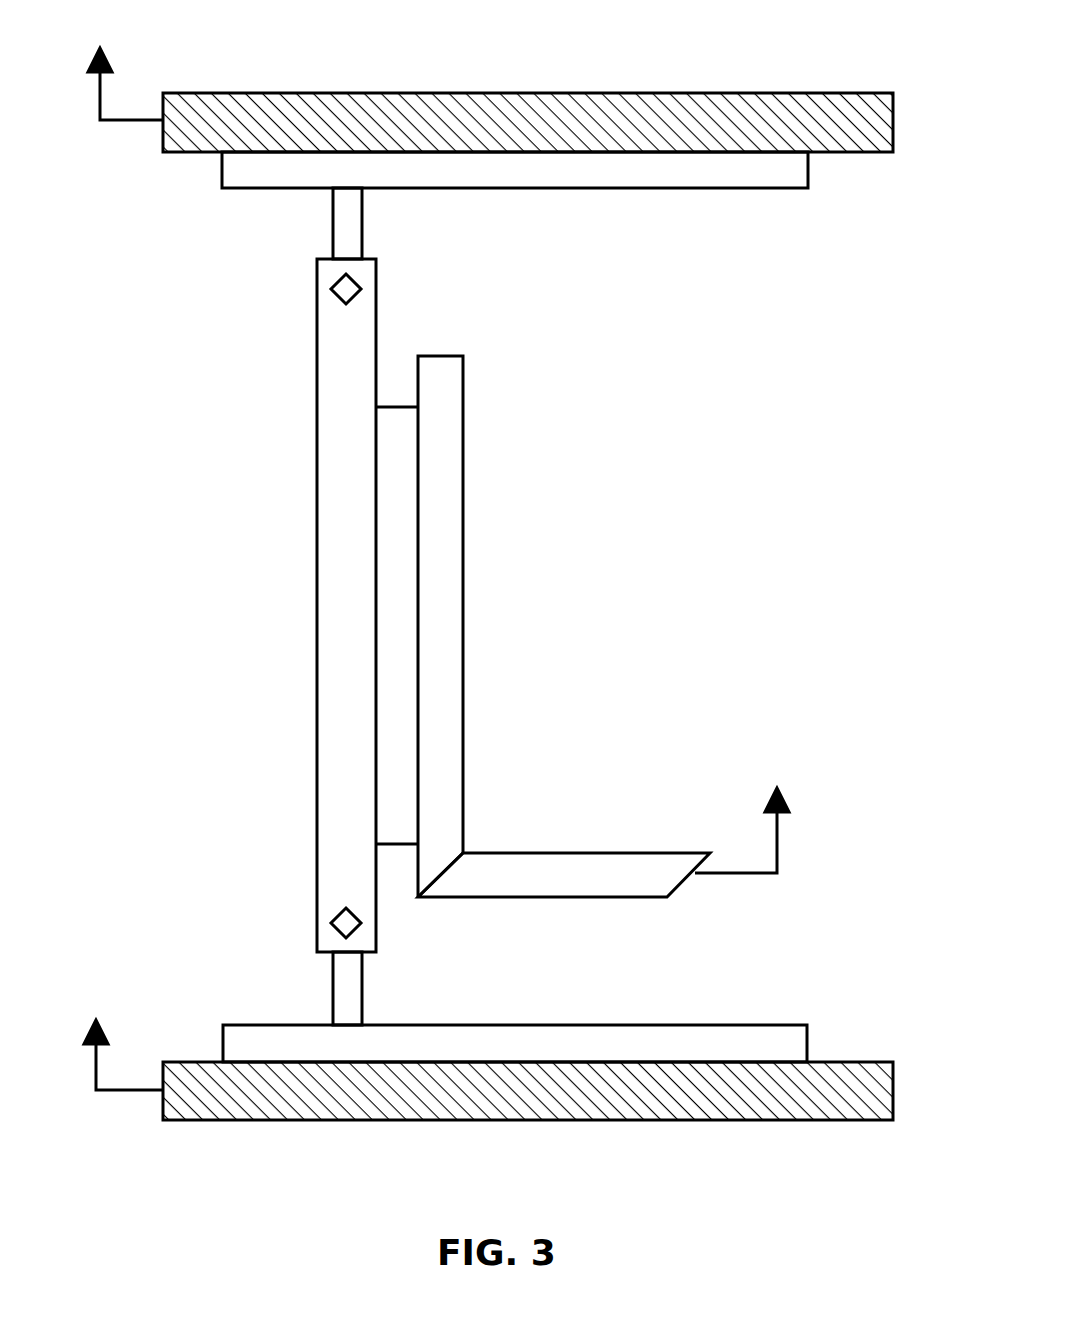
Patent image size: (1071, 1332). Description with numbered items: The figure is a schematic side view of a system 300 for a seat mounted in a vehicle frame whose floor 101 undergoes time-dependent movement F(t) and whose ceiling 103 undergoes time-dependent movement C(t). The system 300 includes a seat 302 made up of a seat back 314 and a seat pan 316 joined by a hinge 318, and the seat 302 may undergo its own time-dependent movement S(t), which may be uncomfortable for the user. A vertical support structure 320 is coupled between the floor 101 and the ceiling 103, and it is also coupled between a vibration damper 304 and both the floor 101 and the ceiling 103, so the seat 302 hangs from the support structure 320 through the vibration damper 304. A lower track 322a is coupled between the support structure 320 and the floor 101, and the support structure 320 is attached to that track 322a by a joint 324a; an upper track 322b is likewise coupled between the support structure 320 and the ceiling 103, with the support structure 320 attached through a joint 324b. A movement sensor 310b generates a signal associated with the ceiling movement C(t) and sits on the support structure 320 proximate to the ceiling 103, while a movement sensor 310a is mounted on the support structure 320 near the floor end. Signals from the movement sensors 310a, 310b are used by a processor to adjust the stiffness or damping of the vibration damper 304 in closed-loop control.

The floor 101 is at (218, 1122).
The ceiling 103 is at (707, 92).
The system 300 is at (877, 208).
The seat 302 is at (510, 367).
The vibration damper 304 is at (397, 407).
The movement sensor 310a is at (332, 922).
The movement sensor 310b is at (330, 290).
The seat back 314 is at (465, 468).
The seat pan 316 is at (670, 852).
The hinge 318 is at (467, 850).
The support structure 320 is at (317, 638).
The track 322a is at (767, 1023).
The track 322b is at (647, 190).
The joint 324a is at (363, 993).
The joint 324b is at (362, 212).